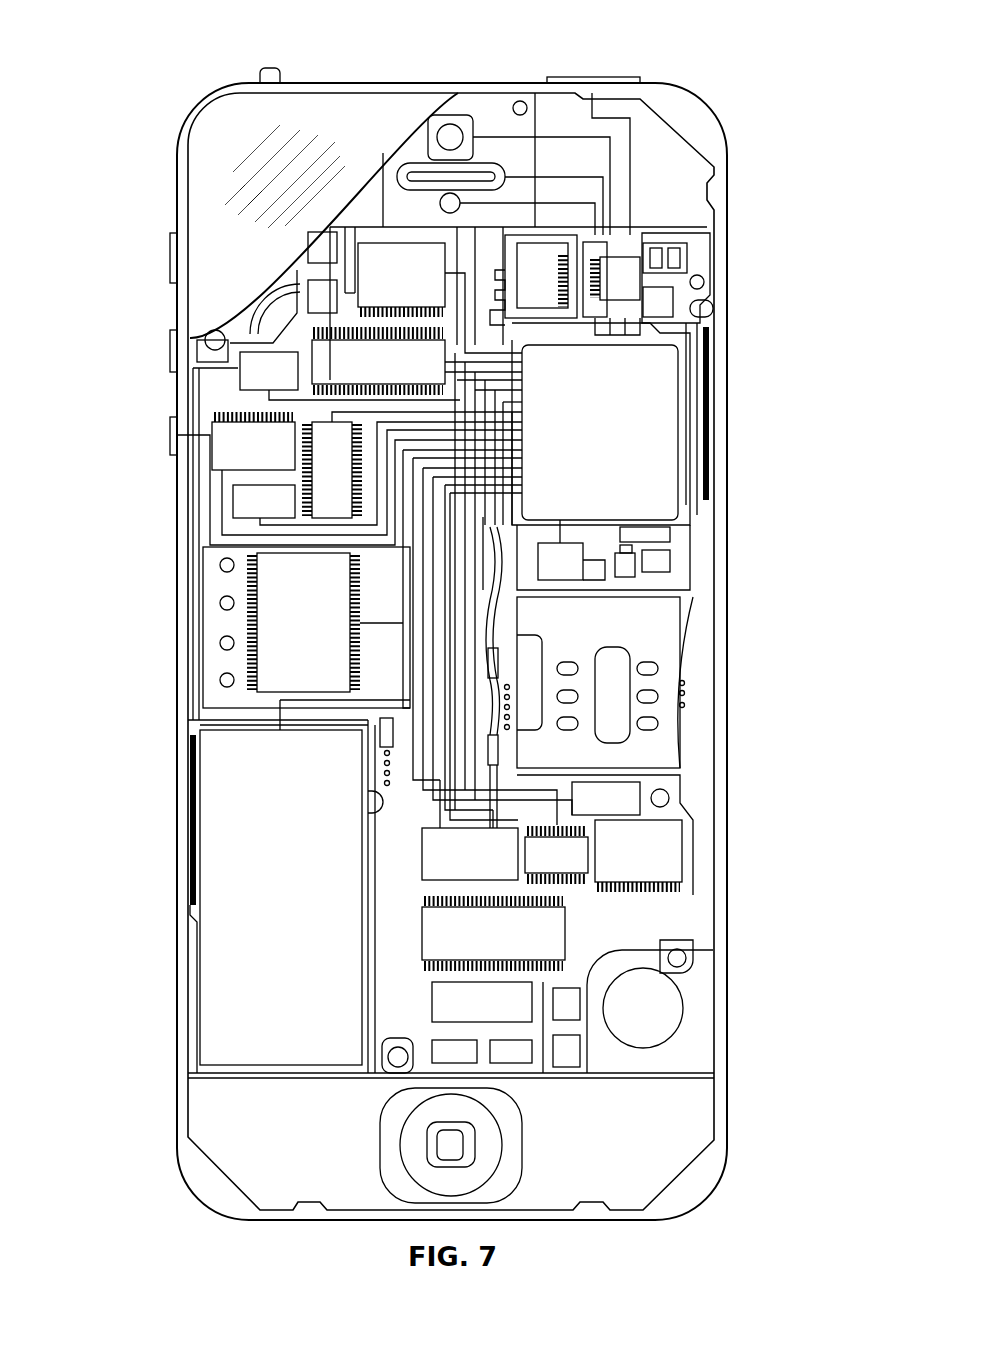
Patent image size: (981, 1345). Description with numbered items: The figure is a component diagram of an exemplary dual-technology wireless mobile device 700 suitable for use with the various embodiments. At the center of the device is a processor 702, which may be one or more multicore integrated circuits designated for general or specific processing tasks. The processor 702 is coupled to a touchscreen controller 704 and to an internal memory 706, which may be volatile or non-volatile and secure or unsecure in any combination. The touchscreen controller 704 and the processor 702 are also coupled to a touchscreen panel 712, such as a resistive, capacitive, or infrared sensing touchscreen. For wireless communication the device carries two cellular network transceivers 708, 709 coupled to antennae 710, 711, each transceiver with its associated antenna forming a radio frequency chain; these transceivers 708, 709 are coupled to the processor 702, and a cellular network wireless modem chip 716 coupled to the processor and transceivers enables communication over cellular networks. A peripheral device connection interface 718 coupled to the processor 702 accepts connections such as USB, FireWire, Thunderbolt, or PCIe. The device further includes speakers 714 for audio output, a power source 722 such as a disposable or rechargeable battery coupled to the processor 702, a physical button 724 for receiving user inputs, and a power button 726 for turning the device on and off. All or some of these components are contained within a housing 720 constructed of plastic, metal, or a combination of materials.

The mobile device 700 is at (150, 100).
The processor 702 is at (600, 432).
The touchscreen controller 704 is at (401, 277).
The internal memory 706 is at (378, 361).
The cellular network transceiver 708 is at (617, 278).
The cellular network transceiver 709 is at (269, 371).
The antenna 710 is at (708, 392).
The antenna 711 is at (188, 758).
The touchscreen panel 712 is at (205, 190).
The speakers 714 is at (413, 165).
The cellular network wireless modem chip 716 is at (493, 933).
The peripheral device connection interface 718 is at (482, 1002).
The housing 720 is at (727, 1090).
The power source 722 is at (281, 897).
The physical button 724 is at (450, 1145).
The power button 726 is at (600, 70).